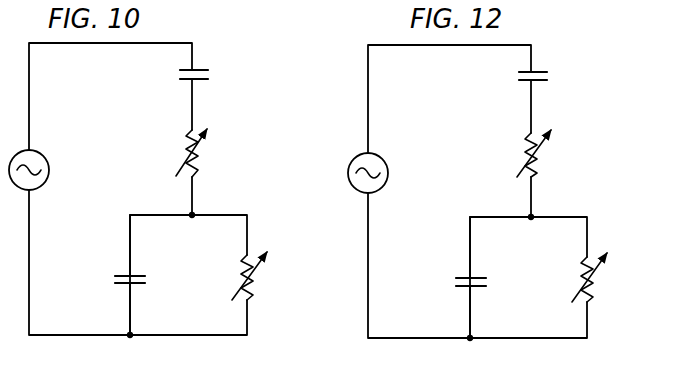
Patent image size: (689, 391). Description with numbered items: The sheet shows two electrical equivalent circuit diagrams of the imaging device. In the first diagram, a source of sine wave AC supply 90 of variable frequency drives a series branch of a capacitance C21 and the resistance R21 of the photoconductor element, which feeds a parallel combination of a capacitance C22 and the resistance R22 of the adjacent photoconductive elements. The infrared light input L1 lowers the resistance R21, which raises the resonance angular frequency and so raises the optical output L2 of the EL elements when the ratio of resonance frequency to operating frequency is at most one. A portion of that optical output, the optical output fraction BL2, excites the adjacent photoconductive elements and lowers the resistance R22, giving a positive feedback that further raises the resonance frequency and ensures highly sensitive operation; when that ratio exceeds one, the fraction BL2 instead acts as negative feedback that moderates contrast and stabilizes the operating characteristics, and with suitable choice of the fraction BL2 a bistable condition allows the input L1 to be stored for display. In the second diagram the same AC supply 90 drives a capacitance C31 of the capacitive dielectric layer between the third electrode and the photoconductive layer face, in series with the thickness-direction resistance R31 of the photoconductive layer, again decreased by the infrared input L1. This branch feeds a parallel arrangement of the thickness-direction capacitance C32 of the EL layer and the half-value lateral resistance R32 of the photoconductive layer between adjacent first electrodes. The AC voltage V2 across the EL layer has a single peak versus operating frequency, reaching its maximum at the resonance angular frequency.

In FIG. 10, the source of sine wave AC supply 90 is at (44, 183).
In FIG. 12, the source of sine wave AC supply 90 is at (358, 192).
In FIG. 10, the capacitance C21 is at (178, 77).
In FIG. 10, the resistance of the photoconductor element R21 is at (202, 157).
In FIG. 10, the infrared light input L1 is at (234, 150).
In FIG. 12, the infrared light input L1 is at (603, 194).
In FIG. 10, the capacitance C22 is at (116, 275).
In FIG. 10, the resistance of the photoconductive elements R22 is at (260, 276).
In FIG. 10, the portion βL2 of optical output BL2 is at (229, 290).
In FIG. 10, the optical output L2 is at (123, 287).
In FIG. 12, the optical output L2 is at (464, 290).
In FIG. 12, the capacitance of the capacitive dielectric layer portion C31 is at (513, 78).
In FIG. 12, the thickness-direction resistance of the photoconductive layer R31 is at (544, 155).
In FIG. 12, the AC voltage V2(ω) across the EL layer V2 is at (531, 333).
In FIG. 12, the thickness-direction capacitance of the EL layer portion C32 is at (453, 279).
In FIG. 12, the half value of lateral resistance of the photoconductive layer R32 is at (599, 278).